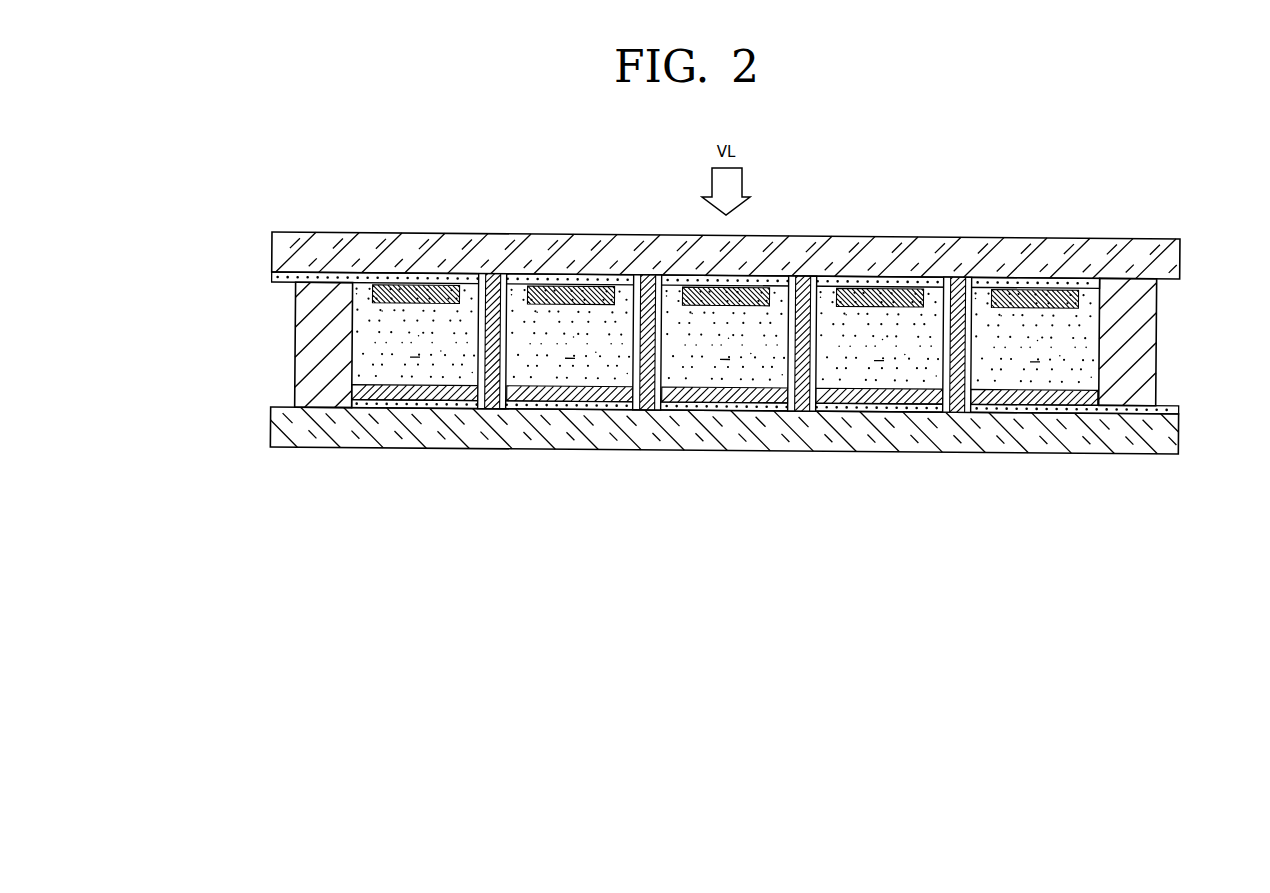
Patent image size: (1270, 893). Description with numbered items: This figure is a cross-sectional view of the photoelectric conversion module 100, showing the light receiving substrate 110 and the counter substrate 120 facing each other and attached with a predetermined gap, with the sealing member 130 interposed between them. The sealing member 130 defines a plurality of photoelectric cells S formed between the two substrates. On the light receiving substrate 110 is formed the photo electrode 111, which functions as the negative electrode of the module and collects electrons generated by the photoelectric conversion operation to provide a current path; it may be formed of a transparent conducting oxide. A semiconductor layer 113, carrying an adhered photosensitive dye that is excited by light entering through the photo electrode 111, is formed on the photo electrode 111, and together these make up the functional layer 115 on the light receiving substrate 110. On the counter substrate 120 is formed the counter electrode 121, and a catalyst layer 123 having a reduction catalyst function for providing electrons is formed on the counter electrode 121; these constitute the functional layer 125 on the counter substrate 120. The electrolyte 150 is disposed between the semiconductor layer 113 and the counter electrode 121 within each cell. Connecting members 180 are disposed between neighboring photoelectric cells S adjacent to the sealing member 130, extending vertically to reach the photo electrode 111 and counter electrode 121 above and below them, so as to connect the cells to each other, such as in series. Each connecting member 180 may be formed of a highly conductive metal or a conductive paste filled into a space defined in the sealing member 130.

The photoelectric conversion module 100 is at (1107, 226).
The light receiving substrate 110 is at (1172, 260).
The photo electrode 111 is at (272, 276).
The semiconductor layer 113 is at (373, 289).
The functional layer 115 is at (618, 295).
The counter substrate 120 is at (1162, 442).
The counter electrode 121 is at (375, 403).
The catalyst layer 123 is at (367, 392).
The functional layer 125 is at (794, 468).
The sealing member 130 is at (1140, 333).
The electrolyte 150 is at (362, 349).
The connecting member 180 is at (489, 404).